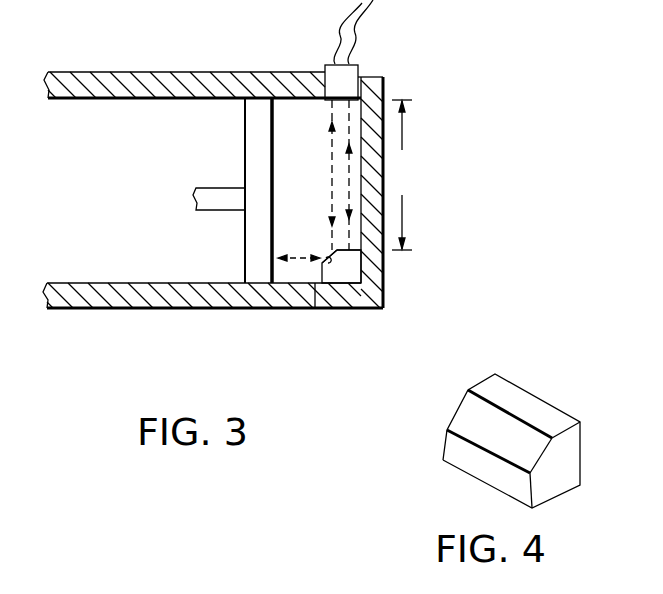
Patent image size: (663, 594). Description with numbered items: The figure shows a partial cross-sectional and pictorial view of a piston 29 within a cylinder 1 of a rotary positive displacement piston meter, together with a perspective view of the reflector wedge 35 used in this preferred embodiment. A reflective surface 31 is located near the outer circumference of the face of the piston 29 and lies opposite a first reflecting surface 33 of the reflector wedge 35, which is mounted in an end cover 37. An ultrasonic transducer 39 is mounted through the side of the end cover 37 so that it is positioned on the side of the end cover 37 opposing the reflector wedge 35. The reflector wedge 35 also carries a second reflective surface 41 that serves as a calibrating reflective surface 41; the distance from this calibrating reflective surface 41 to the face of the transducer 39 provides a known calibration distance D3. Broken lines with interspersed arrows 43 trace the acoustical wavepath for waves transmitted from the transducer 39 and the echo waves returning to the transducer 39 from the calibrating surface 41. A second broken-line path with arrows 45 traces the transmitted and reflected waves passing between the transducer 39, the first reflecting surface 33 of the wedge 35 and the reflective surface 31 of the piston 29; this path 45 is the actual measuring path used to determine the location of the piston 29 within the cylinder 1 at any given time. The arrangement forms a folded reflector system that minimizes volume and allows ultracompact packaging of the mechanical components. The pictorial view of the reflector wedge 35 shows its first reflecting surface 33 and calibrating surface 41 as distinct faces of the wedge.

In FIG. 3, the cylinder 1 is at (217, 80).
In FIG. 3, the piston 29 is at (245, 148).
In FIG. 3, the reflective surface 31 is at (274, 264).
In FIG. 3, the first reflecting surface 33 is at (325, 262).
In FIG. 4, the first reflecting surface 33 is at (483, 425).
In FIG. 3, the reflector wedge 35 is at (342, 273).
In FIG. 4, the reflector wedge 35 is at (585, 453).
In FIG. 3, the end cover 37 is at (384, 91).
In FIG. 3, the ultrasonic transducer 39 is at (350, 65).
In FIG. 3, the calibrating reflective surface 41 is at (346, 250).
In FIG. 4, the calibrating reflective surface 41 is at (508, 392).
In FIG. 3, the acoustical wavepath 43 is at (349, 163).
In FIG. 3, the measuring wavepath 45 is at (332, 193).
In FIG. 3, the calibration distance D3 is at (407, 175).